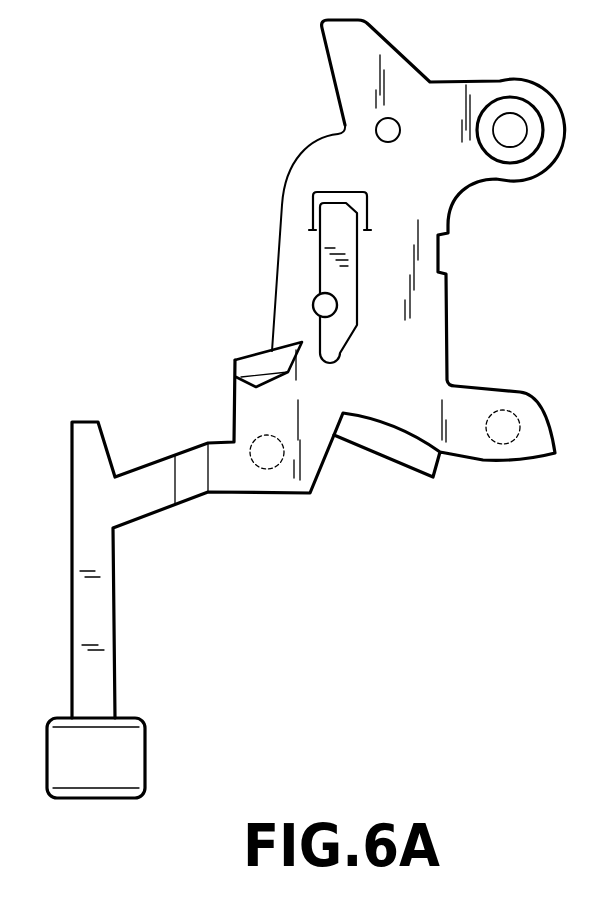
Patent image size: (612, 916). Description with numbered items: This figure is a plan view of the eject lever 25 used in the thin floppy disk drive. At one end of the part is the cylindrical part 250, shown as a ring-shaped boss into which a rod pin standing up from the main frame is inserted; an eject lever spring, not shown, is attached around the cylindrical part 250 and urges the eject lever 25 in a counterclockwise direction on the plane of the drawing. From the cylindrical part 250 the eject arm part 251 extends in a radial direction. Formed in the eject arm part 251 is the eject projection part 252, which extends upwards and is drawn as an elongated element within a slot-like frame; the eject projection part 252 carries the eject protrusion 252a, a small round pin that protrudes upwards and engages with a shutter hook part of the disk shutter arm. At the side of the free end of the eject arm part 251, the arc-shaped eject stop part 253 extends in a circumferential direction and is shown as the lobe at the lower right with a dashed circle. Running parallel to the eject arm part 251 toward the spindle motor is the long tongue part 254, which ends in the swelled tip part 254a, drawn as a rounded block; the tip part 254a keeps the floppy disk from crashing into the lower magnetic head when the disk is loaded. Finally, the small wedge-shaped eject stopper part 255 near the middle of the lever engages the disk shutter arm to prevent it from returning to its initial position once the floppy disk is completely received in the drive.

The eject lever 25 is at (403, 50).
The cylindrical part 250 is at (515, 97).
The eject arm part 251 is at (430, 304).
The eject projection part 252 is at (340, 330).
The eject protrusion 252a is at (313, 305).
The eject stop part 253 is at (520, 448).
The tongue part 254 is at (108, 657).
The tip part 254a is at (135, 757).
The eject stopper part 255 is at (268, 352).